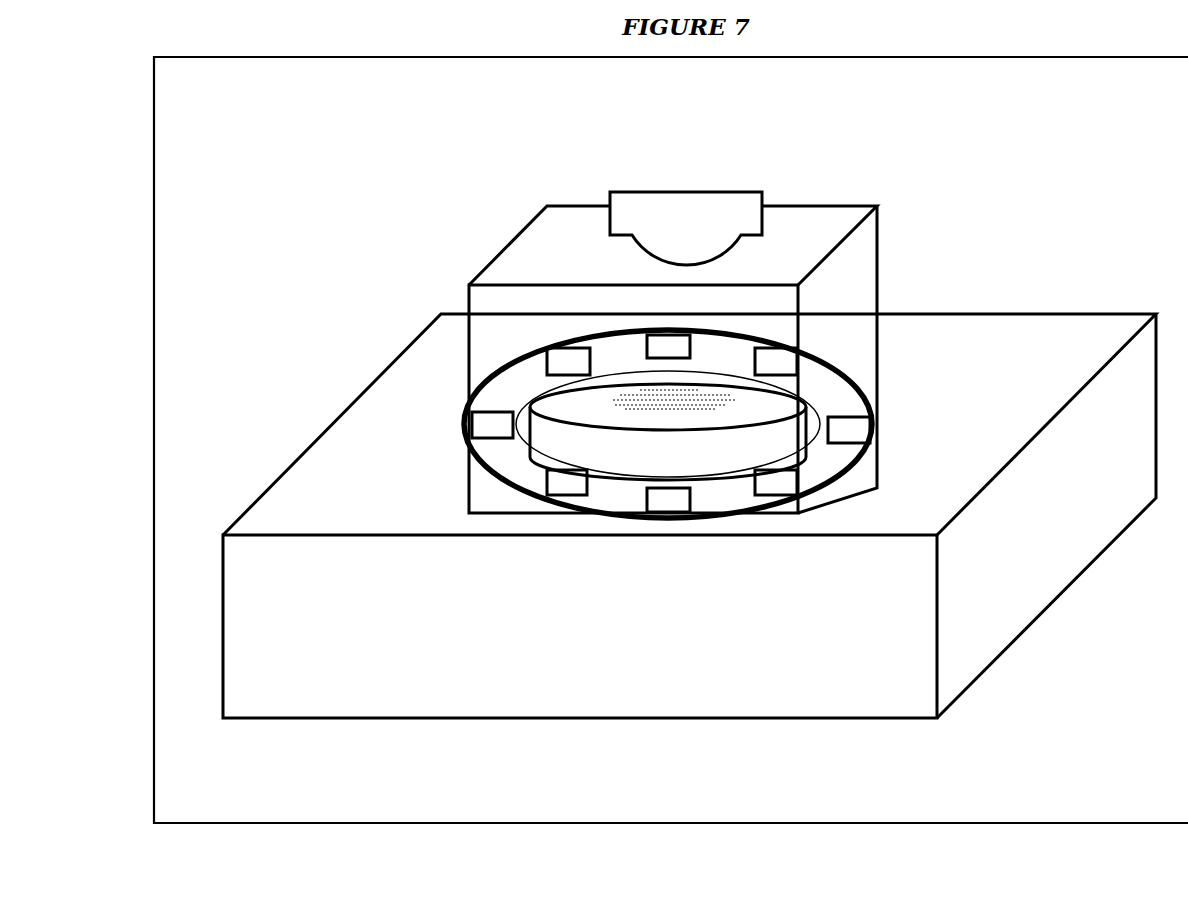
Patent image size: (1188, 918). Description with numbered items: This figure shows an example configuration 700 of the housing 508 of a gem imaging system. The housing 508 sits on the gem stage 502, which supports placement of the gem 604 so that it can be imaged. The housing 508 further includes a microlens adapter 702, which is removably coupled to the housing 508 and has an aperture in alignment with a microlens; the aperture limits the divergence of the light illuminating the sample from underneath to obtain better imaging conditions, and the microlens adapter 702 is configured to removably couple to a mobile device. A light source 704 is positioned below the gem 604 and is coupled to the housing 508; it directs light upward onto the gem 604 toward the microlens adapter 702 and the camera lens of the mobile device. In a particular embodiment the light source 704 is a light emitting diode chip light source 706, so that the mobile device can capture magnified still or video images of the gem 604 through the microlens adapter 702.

The example configuration 700 is at (199, 89).
The gem stage 502 is at (904, 697).
The housing 508 is at (825, 242).
The microlens adapter 702 is at (702, 234).
The light source 704 is at (858, 377).
The light emitting diode (LED) chip light source 706 is at (855, 428).
The gem 604 is at (672, 399).